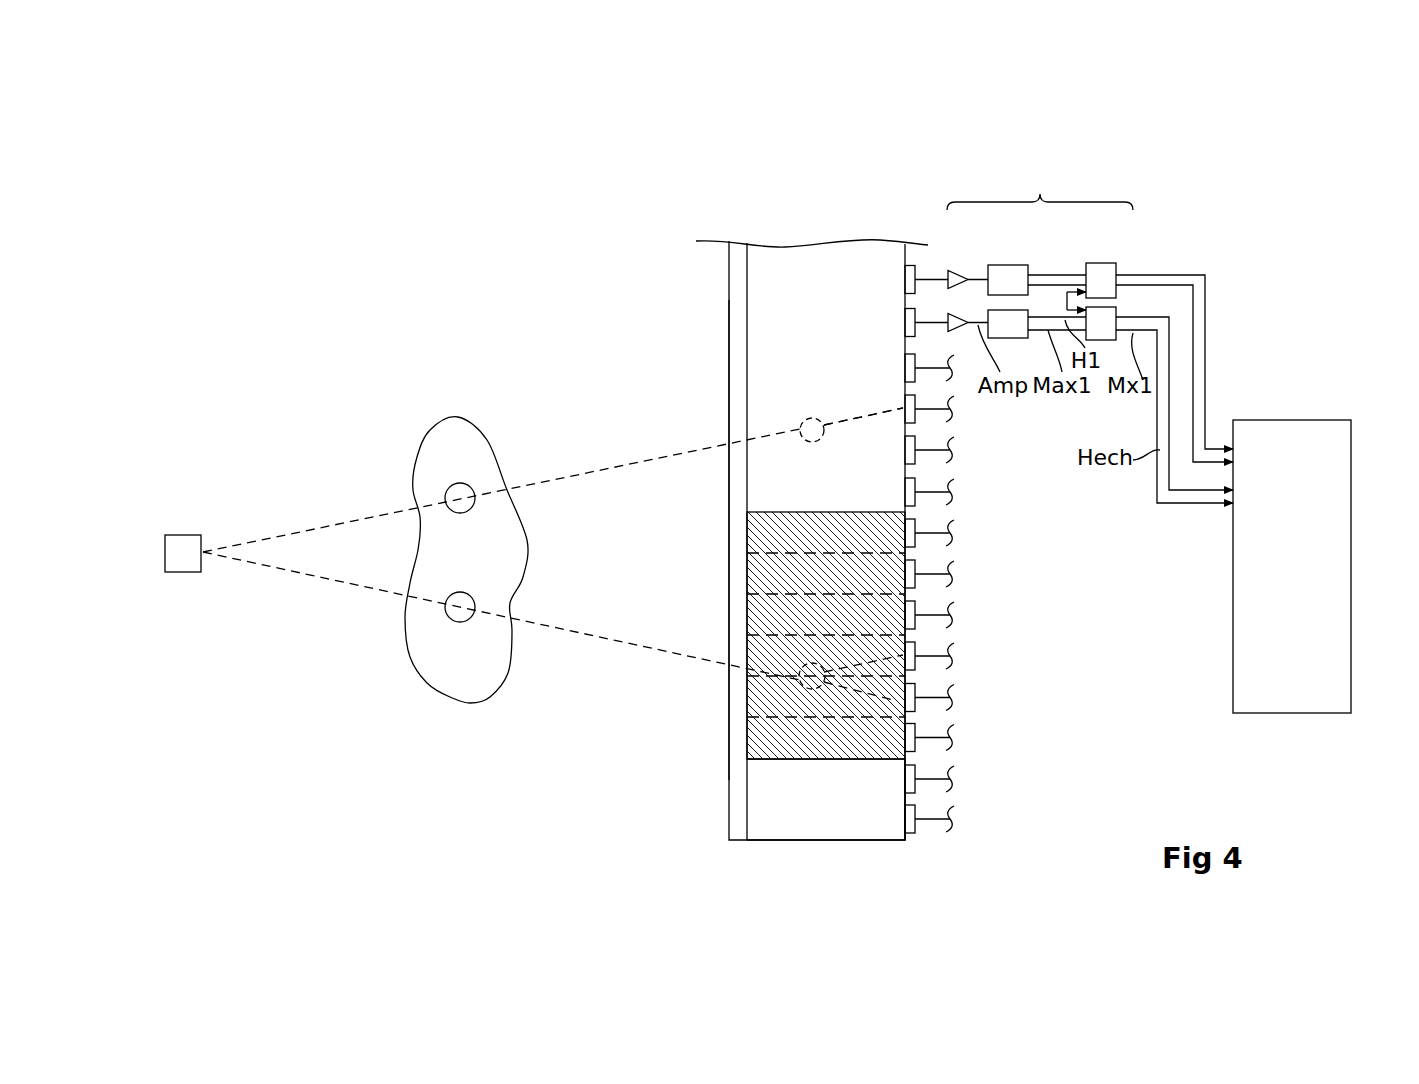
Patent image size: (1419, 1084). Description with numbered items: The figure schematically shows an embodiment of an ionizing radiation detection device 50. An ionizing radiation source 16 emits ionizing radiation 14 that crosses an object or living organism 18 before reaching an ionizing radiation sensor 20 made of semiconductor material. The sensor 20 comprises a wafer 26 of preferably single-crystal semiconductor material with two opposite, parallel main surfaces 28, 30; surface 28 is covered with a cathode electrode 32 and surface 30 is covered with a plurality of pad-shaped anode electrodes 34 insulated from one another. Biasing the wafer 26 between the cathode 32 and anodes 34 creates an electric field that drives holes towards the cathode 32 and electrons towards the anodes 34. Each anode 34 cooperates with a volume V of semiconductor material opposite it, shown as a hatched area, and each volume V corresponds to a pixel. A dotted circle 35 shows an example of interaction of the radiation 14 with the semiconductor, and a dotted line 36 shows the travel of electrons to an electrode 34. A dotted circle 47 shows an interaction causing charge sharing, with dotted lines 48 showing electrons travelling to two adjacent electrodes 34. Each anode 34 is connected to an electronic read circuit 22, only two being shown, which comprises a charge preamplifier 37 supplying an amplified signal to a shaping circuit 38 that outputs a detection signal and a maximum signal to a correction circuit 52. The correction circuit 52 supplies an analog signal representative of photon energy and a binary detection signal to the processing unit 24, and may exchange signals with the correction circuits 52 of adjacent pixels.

The ionizing radiation detection device 50 is at (550, 222).
The ionizing radiation source 16 is at (183, 545).
The ionizing radiation 14 is at (340, 522).
The object or living organism 18 is at (433, 692).
The ionizing radiation sensor 20 is at (865, 842).
The electronic read circuits 22 is at (1040, 190).
The processing unit 24 is at (1300, 420).
The wafer 26 is at (818, 815).
The main surface 28 is at (746, 825).
The main surface 30 is at (907, 841).
The cathode electrodes 32 is at (738, 788).
The anode electrodes 34 is at (910, 762).
The interaction 35 is at (803, 423).
The electron travel 36 is at (867, 413).
The charge preamplifier 37 is at (955, 270).
The shaping circuit 38 is at (1008, 276).
The interaction causing charge sharing 47 is at (803, 668).
The electron travel to adjacent electrodes 48 is at (867, 657).
The correction circuit 52 is at (1095, 272).
The volume of semiconductor material V is at (773, 737).